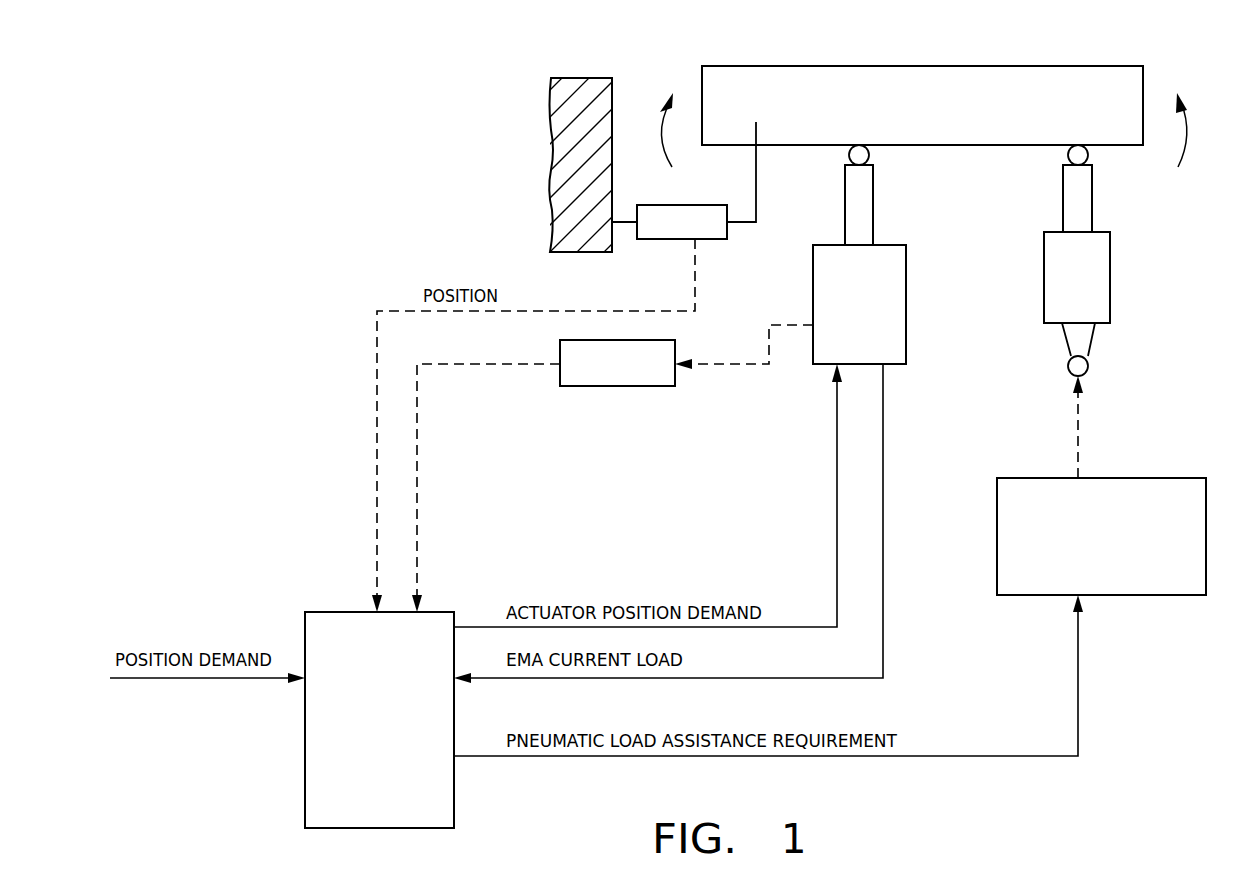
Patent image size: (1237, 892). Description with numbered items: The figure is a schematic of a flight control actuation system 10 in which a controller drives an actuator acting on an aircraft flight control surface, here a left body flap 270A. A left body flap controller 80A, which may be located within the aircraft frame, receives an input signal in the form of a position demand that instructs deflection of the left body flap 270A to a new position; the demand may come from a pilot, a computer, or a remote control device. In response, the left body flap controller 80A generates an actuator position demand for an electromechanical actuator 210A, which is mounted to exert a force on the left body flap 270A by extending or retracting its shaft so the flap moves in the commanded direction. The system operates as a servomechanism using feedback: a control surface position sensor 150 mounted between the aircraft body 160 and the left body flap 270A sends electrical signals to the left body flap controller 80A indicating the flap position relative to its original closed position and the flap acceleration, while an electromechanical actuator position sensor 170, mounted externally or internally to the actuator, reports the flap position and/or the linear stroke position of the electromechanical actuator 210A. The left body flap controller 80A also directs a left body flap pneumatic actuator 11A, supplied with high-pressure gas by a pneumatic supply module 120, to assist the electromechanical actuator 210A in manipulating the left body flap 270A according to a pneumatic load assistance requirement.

The flight control actuation system 10 is at (378, 85).
The aircraft body 160 is at (568, 123).
The left body flap 270A is at (990, 66).
The control surface position sensor 150 is at (706, 241).
The electromechanical actuator 210A is at (908, 302).
The left body flap pneumatic actuator 11A is at (1112, 258).
The electromechanical actuator position sensor 170 is at (624, 388).
The pneumatic supply module 120 is at (1113, 597).
The left body flap controller 80A is at (322, 737).